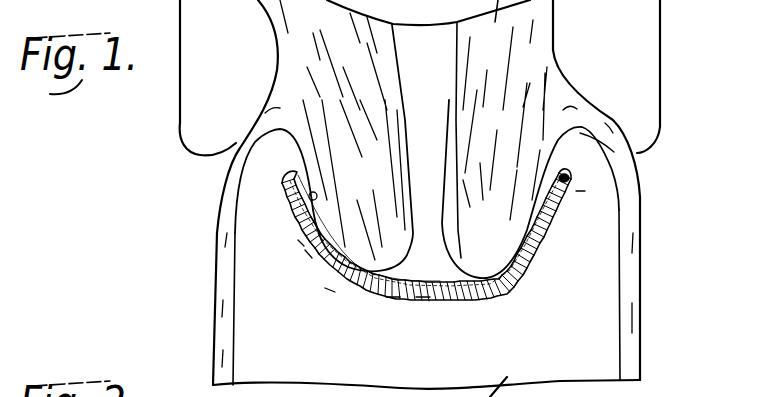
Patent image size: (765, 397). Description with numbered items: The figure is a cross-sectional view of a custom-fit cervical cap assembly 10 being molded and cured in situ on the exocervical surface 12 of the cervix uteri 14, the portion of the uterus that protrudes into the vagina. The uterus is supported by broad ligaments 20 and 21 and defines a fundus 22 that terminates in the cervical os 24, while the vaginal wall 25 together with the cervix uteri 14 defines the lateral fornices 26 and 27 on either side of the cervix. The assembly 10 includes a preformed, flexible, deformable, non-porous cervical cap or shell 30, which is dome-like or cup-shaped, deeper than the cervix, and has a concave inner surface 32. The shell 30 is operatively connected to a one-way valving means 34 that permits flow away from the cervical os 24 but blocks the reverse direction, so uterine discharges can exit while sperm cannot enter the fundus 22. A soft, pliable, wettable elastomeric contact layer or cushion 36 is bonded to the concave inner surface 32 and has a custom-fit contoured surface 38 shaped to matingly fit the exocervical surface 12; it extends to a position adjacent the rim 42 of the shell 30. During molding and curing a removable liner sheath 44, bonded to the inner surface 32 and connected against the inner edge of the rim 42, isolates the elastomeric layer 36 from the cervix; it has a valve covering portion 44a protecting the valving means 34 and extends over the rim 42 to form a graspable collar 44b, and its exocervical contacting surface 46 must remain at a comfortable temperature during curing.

The cervical cap assembly 10 is at (529, 293).
The exocervical surface 12 is at (543, 238).
The cervix uteri 14 is at (467, 160).
The broad ligament 20 is at (190, 138).
The broad ligament 21 is at (659, 128).
The fundus 22 is at (452, 95).
The cervical os 24 is at (440, 236).
The vaginal wall 25 is at (233, 323).
The lateral fornix 26 is at (242, 172).
The lateral fornix 27 is at (632, 162).
The shell 30 is at (307, 255).
The concave inner surface 32 is at (330, 290).
The one-way valving means 34 is at (393, 298).
The elastomeric layer 36 is at (533, 262).
The custom-fit contoured surface 38 is at (304, 208).
The rim 42 is at (563, 176).
The liner sheath 44 is at (300, 244).
The valve covering portion 44a is at (423, 298).
The graspable collar 44b is at (576, 191).
The exocervical contacting surface 46 is at (553, 215).